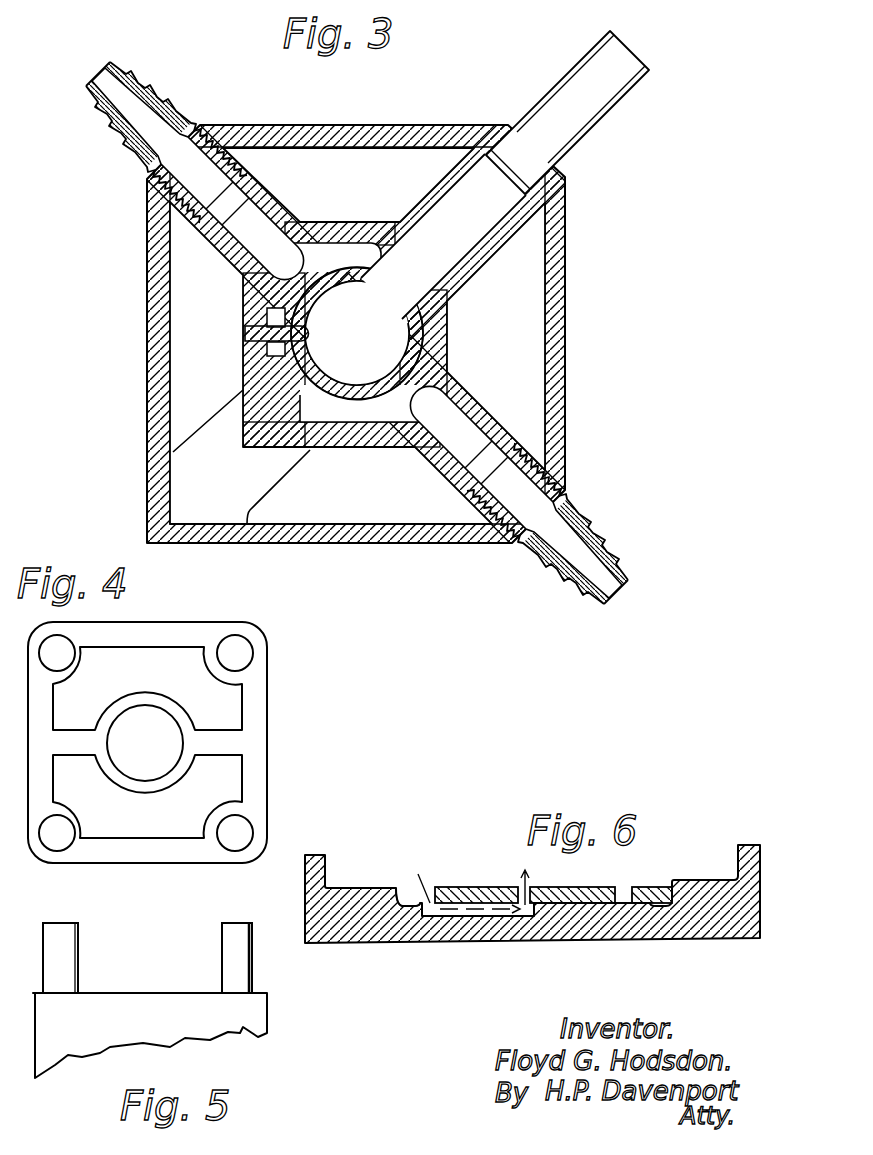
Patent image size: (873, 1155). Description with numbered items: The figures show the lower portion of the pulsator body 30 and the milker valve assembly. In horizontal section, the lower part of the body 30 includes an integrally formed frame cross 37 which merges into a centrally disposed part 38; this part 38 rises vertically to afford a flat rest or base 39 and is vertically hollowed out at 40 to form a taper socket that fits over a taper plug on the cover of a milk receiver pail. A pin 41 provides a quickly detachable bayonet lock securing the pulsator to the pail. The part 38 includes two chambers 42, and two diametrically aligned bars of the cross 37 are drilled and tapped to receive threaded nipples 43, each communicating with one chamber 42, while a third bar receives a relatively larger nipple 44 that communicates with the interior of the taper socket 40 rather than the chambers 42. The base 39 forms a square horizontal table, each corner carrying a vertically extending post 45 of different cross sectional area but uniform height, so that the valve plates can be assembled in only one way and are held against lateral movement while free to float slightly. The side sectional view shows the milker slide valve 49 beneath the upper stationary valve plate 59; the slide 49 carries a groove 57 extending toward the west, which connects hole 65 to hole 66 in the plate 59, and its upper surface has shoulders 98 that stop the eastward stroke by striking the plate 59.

In FIG. 3, the valve body 30 is at (562, 383).
In FIG. 3, the frame cross 37 is at (258, 479).
In FIG. 3, the centrally disposed part 38 is at (387, 437).
In FIG. 4, the centrally disposed part 38 is at (267, 710).
In FIG. 5, the centrally disposed part 38 is at (257, 1015).
In FIG. 4, the flat rest or base 39 is at (250, 680).
In FIG. 5, the flat rest or base 39 is at (167, 993).
In FIG. 3, the taper socket 40 is at (357, 333).
In FIG. 4, the taper socket 40 is at (145, 743).
In FIG. 3, the pin 41 is at (247, 335).
In FIG. 3, the chambers 42 is at (356, 334).
In FIG. 3, the threaded nipples 43 is at (170, 112).
In FIG. 3, the relatively larger nipple 44 is at (596, 136).
In FIG. 4, the posts 45 is at (230, 653).
In FIG. 5, the posts 45 is at (222, 932).
In FIG. 6, the slide valve 49 is at (347, 890).
In FIG. 6, the groove 57 is at (437, 915).
In FIG. 6, the upper stationary valve plate 59 is at (600, 887).
In FIG. 6, the hole 65 is at (518, 888).
In FIG. 6, the hole 66 is at (630, 890).
In FIG. 6, the shoulders 98 is at (395, 885).